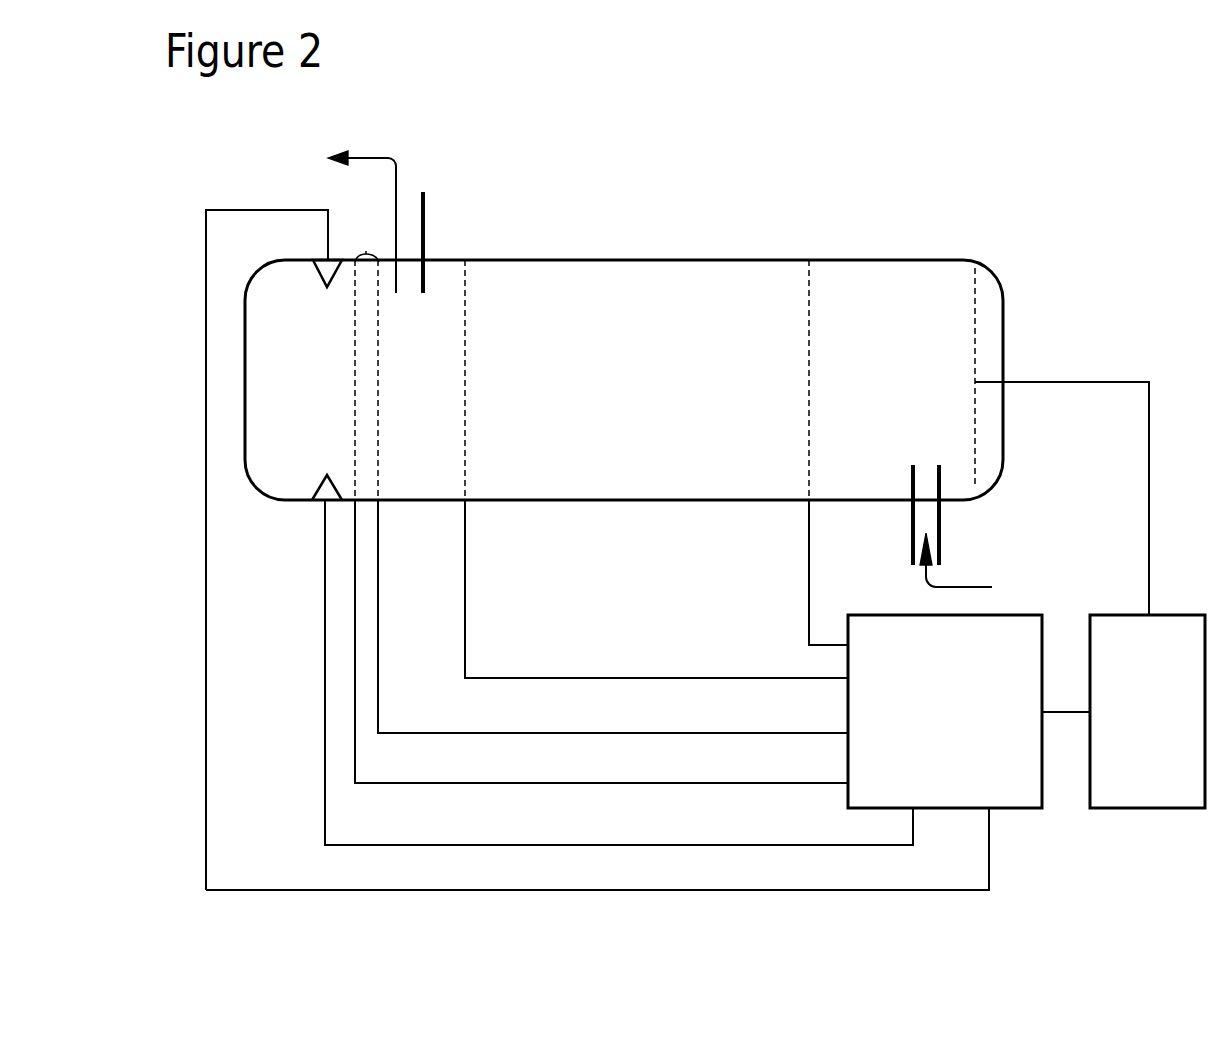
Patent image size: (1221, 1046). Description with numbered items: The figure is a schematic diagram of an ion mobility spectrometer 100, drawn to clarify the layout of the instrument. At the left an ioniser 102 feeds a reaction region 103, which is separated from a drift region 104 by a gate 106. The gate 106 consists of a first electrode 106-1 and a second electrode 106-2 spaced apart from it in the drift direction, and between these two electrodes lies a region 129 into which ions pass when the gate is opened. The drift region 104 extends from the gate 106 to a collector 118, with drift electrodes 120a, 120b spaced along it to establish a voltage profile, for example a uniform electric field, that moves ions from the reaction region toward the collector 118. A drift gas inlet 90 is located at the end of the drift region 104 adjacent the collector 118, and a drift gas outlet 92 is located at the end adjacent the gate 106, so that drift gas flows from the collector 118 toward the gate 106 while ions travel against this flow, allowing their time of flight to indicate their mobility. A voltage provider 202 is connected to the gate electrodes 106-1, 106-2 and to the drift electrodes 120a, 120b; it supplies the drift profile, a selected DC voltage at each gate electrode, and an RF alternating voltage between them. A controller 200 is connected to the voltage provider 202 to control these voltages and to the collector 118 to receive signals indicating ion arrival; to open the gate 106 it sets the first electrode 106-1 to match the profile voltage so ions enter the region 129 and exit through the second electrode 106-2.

The drift gas inlet 90 is at (940, 512).
The drift gas outlet 92 is at (423, 195).
The ion mobility spectrometer 100 is at (608, 200).
The ioniser 102 is at (318, 498).
The reaction region 103 is at (331, 440).
The drift region 104 is at (648, 382).
The gate 106 is at (549, 500).
The first electrode 106-1 is at (355, 344).
The second electrode 106-2 is at (427, 362).
The collector 118 is at (976, 302).
The drift electrode 120a is at (467, 300).
The drift electrode 120b is at (810, 300).
The region 129 is at (372, 463).
The controller 200 is at (1174, 692).
The voltage provider 202 is at (978, 692).